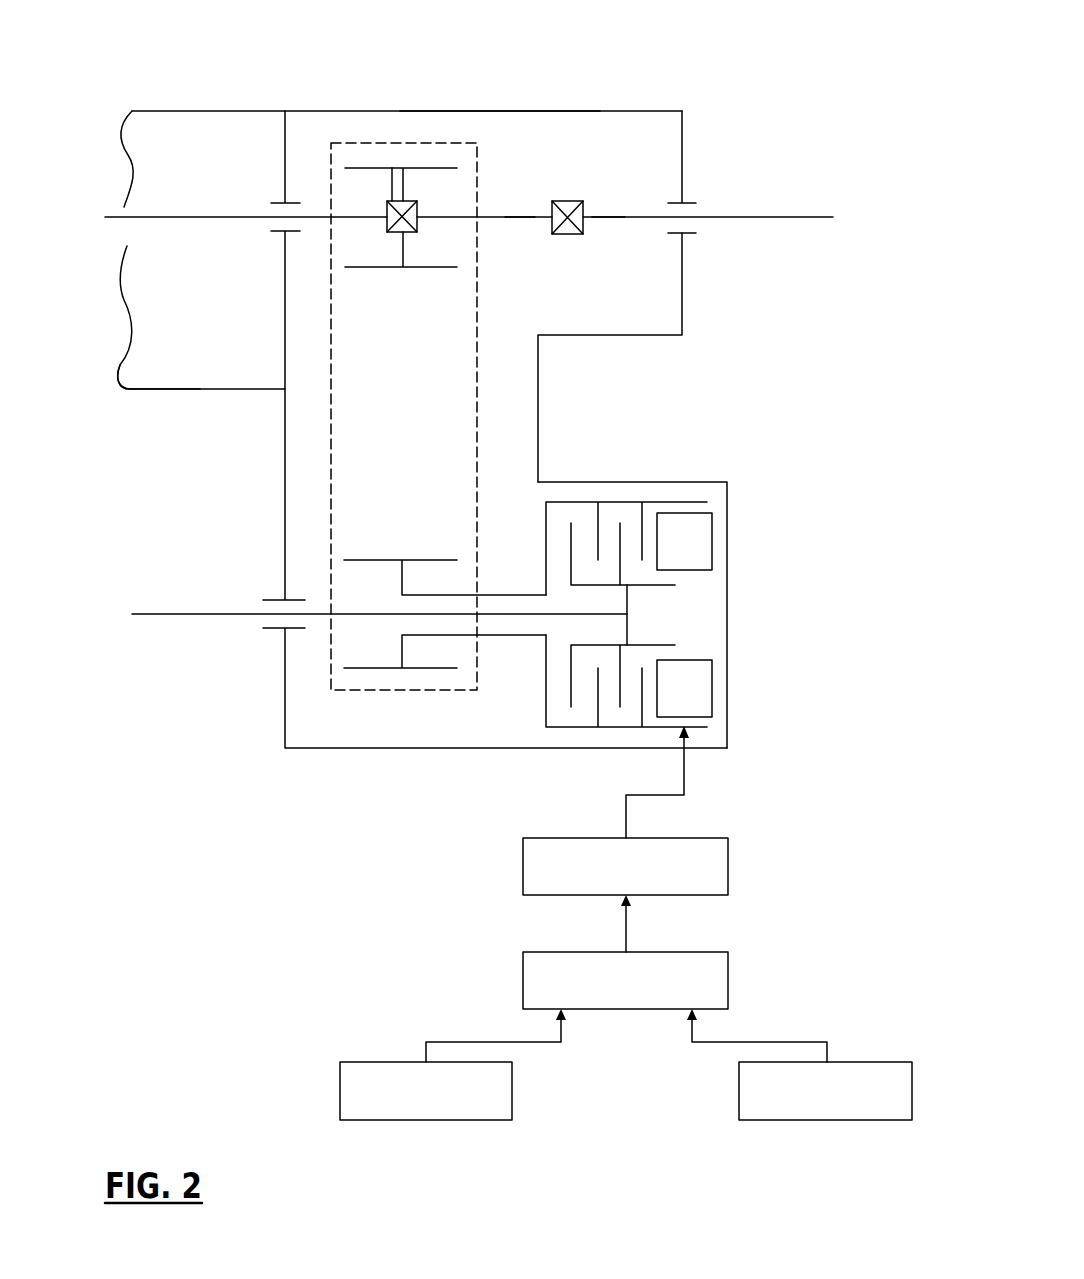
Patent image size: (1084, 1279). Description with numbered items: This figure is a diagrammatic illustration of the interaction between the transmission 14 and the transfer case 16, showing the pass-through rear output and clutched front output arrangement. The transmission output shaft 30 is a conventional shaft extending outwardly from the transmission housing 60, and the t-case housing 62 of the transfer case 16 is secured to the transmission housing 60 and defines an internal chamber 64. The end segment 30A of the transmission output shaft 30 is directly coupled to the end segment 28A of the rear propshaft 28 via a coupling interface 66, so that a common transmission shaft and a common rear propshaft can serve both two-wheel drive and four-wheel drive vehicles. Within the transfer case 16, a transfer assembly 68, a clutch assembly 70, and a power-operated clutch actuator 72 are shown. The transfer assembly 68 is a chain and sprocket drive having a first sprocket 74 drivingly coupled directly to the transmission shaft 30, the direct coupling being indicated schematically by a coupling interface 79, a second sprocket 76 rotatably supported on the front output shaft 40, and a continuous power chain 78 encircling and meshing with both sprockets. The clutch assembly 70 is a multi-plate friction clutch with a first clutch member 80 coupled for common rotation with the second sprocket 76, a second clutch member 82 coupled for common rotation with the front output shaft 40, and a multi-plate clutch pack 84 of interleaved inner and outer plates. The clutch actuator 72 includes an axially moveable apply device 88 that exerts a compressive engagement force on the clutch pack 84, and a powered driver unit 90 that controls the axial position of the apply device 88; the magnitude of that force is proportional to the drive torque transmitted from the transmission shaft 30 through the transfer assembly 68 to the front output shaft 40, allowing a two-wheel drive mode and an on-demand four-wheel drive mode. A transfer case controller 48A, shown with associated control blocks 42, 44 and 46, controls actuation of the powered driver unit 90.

The transmission 14 is at (128, 402).
The transfer case 16 is at (620, 77).
The rear propshaft 28 is at (805, 217).
The end segment of rear propshaft 28A is at (607, 217).
The transmission output shaft 30 is at (222, 217).
The end segment of transmission output shaft 30A is at (519, 217).
The front output shaft 40 is at (168, 614).
The control system 42 is at (453, 950).
The sensors 44 is at (512, 1088).
The mode selector 46 is at (739, 1085).
The transfer case controller 48A is at (728, 975).
The transmission housing 60 is at (210, 111).
The t-case housing 62 is at (682, 125).
The internal chamber 64 is at (665, 291).
The coupling interface 66 is at (567, 235).
The transfer assembly 68 is at (323, 440).
The clutch assembly 70 is at (645, 467).
The power-operated clutch actuator 72 is at (729, 777).
The first sprocket 74 is at (441, 168).
The second sprocket 76 is at (380, 560).
The continuous power chain 78 is at (480, 405).
The coupling interface 79 is at (392, 168).
The first clutch member 80 is at (546, 700).
The second clutch member 82 is at (658, 587).
The multi-plate clutch pack 84 is at (622, 538).
The apply device 88 is at (707, 543).
The powered driver unit 90 is at (728, 868).